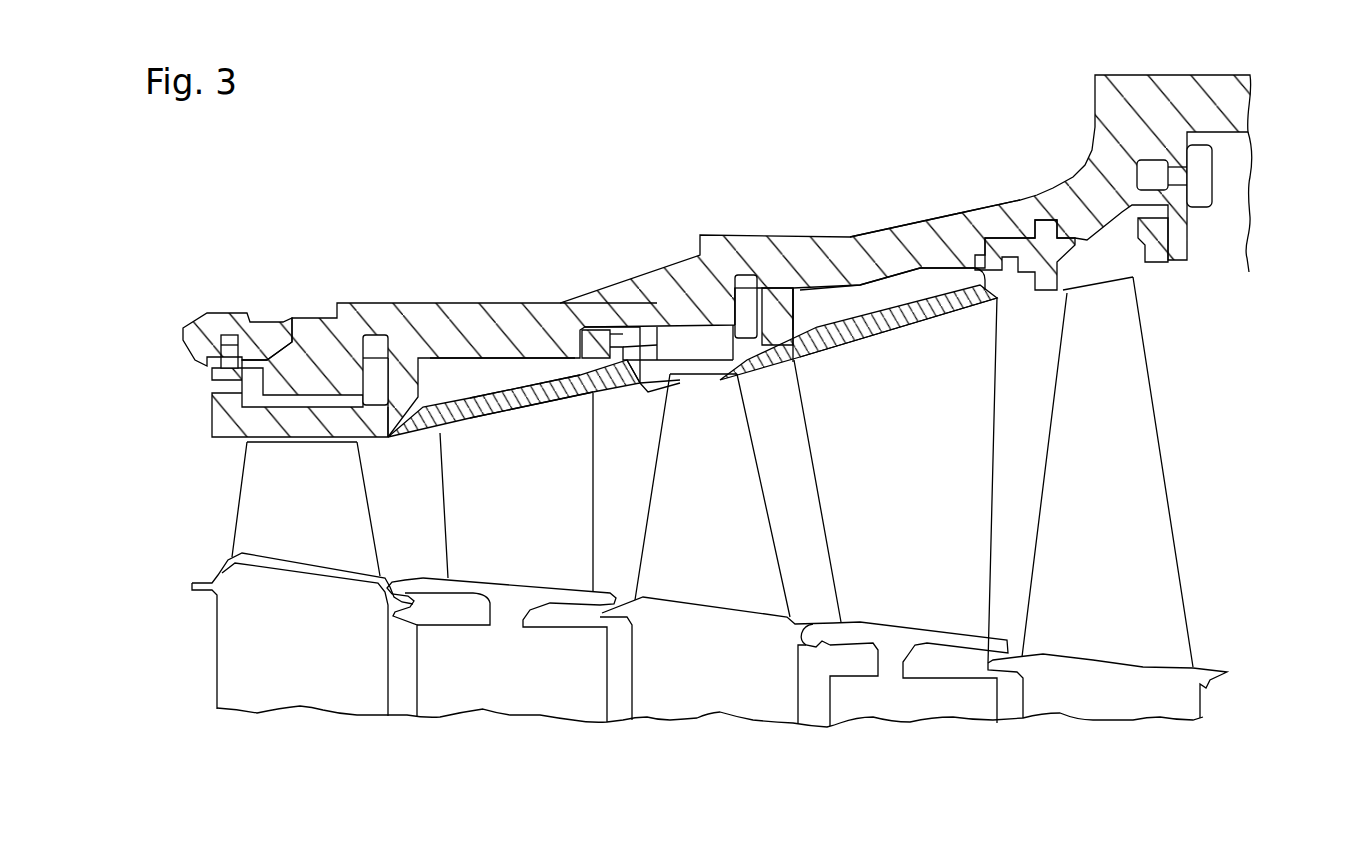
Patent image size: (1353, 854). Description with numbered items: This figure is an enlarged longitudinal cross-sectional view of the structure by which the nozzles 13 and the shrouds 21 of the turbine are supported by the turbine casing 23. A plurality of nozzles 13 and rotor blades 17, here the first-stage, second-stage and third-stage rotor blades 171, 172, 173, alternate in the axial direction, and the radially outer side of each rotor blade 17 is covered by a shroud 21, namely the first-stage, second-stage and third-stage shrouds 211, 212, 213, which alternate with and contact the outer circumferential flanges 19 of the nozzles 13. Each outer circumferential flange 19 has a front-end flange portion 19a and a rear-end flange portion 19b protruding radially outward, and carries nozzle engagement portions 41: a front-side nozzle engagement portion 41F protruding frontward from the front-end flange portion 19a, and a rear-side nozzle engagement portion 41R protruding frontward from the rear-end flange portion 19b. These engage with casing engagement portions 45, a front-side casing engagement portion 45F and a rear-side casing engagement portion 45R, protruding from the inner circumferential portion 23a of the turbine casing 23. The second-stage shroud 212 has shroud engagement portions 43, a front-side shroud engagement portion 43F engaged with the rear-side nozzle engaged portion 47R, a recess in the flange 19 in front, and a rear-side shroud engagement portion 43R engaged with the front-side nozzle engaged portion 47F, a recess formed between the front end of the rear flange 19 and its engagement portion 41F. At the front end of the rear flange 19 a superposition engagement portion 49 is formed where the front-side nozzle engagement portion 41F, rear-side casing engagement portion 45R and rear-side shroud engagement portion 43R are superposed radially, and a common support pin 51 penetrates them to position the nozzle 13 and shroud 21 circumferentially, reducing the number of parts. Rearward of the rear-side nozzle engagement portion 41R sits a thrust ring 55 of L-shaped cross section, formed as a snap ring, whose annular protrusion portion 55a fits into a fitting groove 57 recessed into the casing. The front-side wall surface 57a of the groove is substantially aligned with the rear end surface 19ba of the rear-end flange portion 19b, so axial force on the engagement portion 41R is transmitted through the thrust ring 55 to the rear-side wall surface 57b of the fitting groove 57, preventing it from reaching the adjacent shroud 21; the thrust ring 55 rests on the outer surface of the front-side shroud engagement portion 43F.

The nozzle 13 is at (573, 527).
The rotor blade 17 is at (713, 609).
The first-stage rotor blade 171 is at (374, 550).
The second-stage rotor blade 172 is at (762, 523).
The third-stage rotor blade 173 is at (1143, 507).
The outer circumferential flange 19 is at (533, 410).
The front-end flange portion 19a is at (437, 374).
The rear-end flange portion 19b is at (590, 364).
The rear end surface of the rear-end flange portion 19ba is at (633, 395).
The shroud 21 is at (678, 398).
The first-stage shroud 211 is at (215, 437).
The second-stage shroud 212 is at (703, 372).
The third-stage shroud 213 is at (1107, 265).
The turbine casing 23 is at (565, 292).
The inner circumferential portion of the turbine casing 23a is at (892, 235).
The nozzle engagement portion 41 is at (677, 306).
The front-side nozzle engagement portion 41F is at (795, 312).
The rear-side nozzle engagement portion 41R is at (560, 305).
The shroud engagement portion 43 is at (596, 346).
The front-side shroud engagement portion 43F is at (672, 350).
The rear-side shroud engagement portion 43R is at (400, 418).
The casing engagement portion 45 is at (695, 224).
The front-side casing engagement portion 45F is at (620, 327).
The rear-side casing engagement portion 45R is at (773, 300).
The front-side nozzle engaged portion 47F is at (790, 362).
The rear-side nozzle engaged portion 47R is at (540, 405).
The superposition engagement portion 49 is at (750, 372).
The support pin 51 is at (747, 274).
The thrust ring 55 is at (667, 330).
The annular protrusion portion 55a is at (650, 345).
The fitting groove 57 is at (660, 320).
The front-side wall surface of the fitting groove 57a is at (628, 340).
The rear-side wall surface of the fitting groove 57b is at (650, 385).